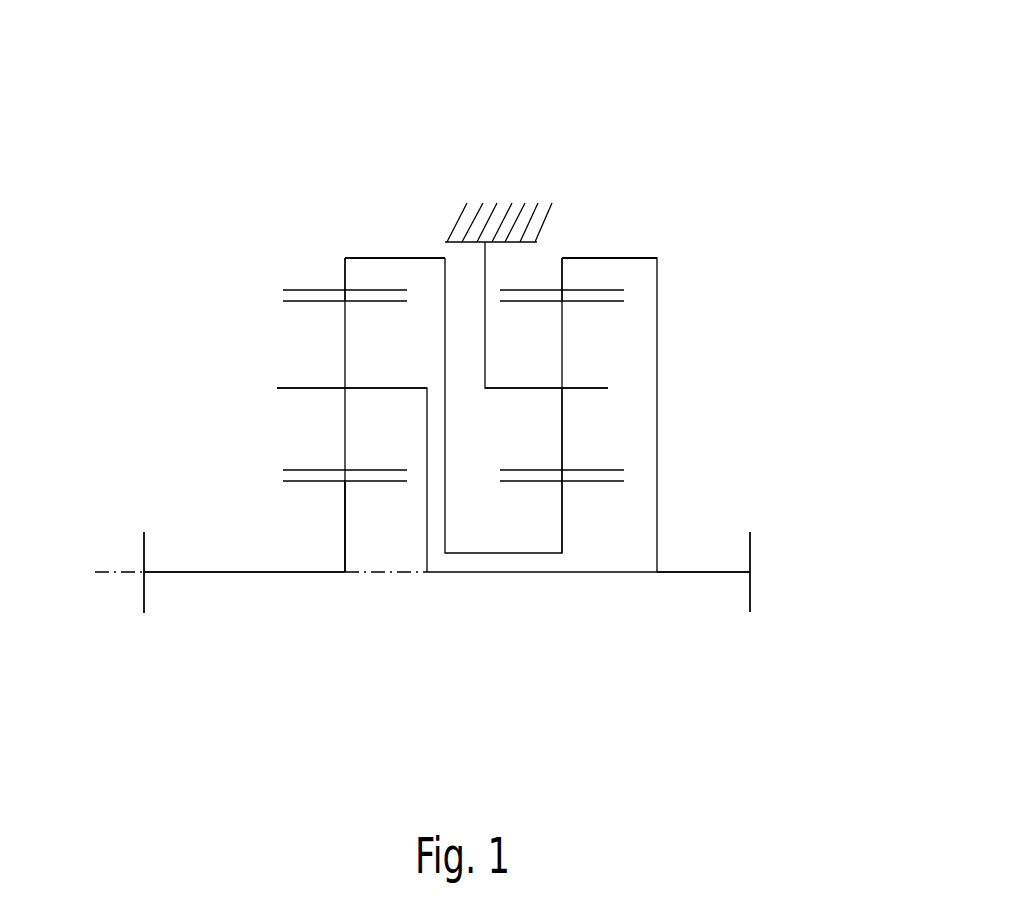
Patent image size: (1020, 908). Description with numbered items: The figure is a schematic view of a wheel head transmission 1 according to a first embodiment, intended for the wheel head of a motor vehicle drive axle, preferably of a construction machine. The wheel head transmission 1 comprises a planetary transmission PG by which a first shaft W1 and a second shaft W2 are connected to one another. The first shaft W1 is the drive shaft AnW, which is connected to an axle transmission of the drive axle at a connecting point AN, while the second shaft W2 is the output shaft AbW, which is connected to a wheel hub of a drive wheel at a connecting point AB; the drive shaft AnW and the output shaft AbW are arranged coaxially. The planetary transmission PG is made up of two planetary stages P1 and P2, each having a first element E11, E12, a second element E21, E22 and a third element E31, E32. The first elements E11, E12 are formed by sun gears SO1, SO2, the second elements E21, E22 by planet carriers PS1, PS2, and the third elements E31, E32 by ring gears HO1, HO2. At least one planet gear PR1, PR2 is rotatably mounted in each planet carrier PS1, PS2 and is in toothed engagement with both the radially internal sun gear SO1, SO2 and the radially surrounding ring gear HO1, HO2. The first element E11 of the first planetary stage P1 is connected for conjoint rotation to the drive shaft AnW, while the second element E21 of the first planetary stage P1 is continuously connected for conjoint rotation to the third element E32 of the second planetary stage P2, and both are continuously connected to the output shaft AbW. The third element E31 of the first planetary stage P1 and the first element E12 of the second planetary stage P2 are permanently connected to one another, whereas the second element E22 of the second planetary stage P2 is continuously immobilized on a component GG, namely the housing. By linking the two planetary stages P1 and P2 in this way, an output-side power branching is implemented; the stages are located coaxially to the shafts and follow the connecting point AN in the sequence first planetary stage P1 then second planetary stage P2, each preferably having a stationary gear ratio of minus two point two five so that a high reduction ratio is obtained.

The wheel head transmission 1 is at (150, 128).
The component for conjoint rotation GG is at (488, 222).
The planetary transmission PG is at (416, 656).
The first planetary stage P1 is at (334, 592).
The second planetary stage P2 is at (563, 593).
The ring gear of the first planetary stage HO1 is at (345, 281).
The ring gear of the second planetary stage HO2 is at (563, 273).
The planet gear of the first planetary stage PR1 is at (345, 343).
The planet gear of the second planetary stage PR2 is at (563, 343).
The planet carrier of the first planetary stage PS1 is at (303, 389).
The planet carrier of the second planetary stage PS2 is at (592, 390).
The sun gear of the first planetary stage SO1 is at (345, 543).
The sun gear of the second planetary stage SO2 is at (563, 503).
The first element of the first planetary stage E11 is at (345, 520).
The second element of the first planetary stage E21 is at (322, 388).
The third element of the first planetary stage E31 is at (345, 272).
The first element of the second planetary stage E12 is at (563, 522).
The second element of the second planetary stage E22 is at (578, 388).
The third element of the second planetary stage E32 is at (563, 280).
The connecting point of the drive shaft AN is at (130, 524).
The connecting point of the output shaft AB is at (771, 595).
The drive shaft AnW is at (218, 572).
The output shaft AbW is at (728, 572).
The first shaft W1 is at (180, 573).
The second shaft W2 is at (710, 573).